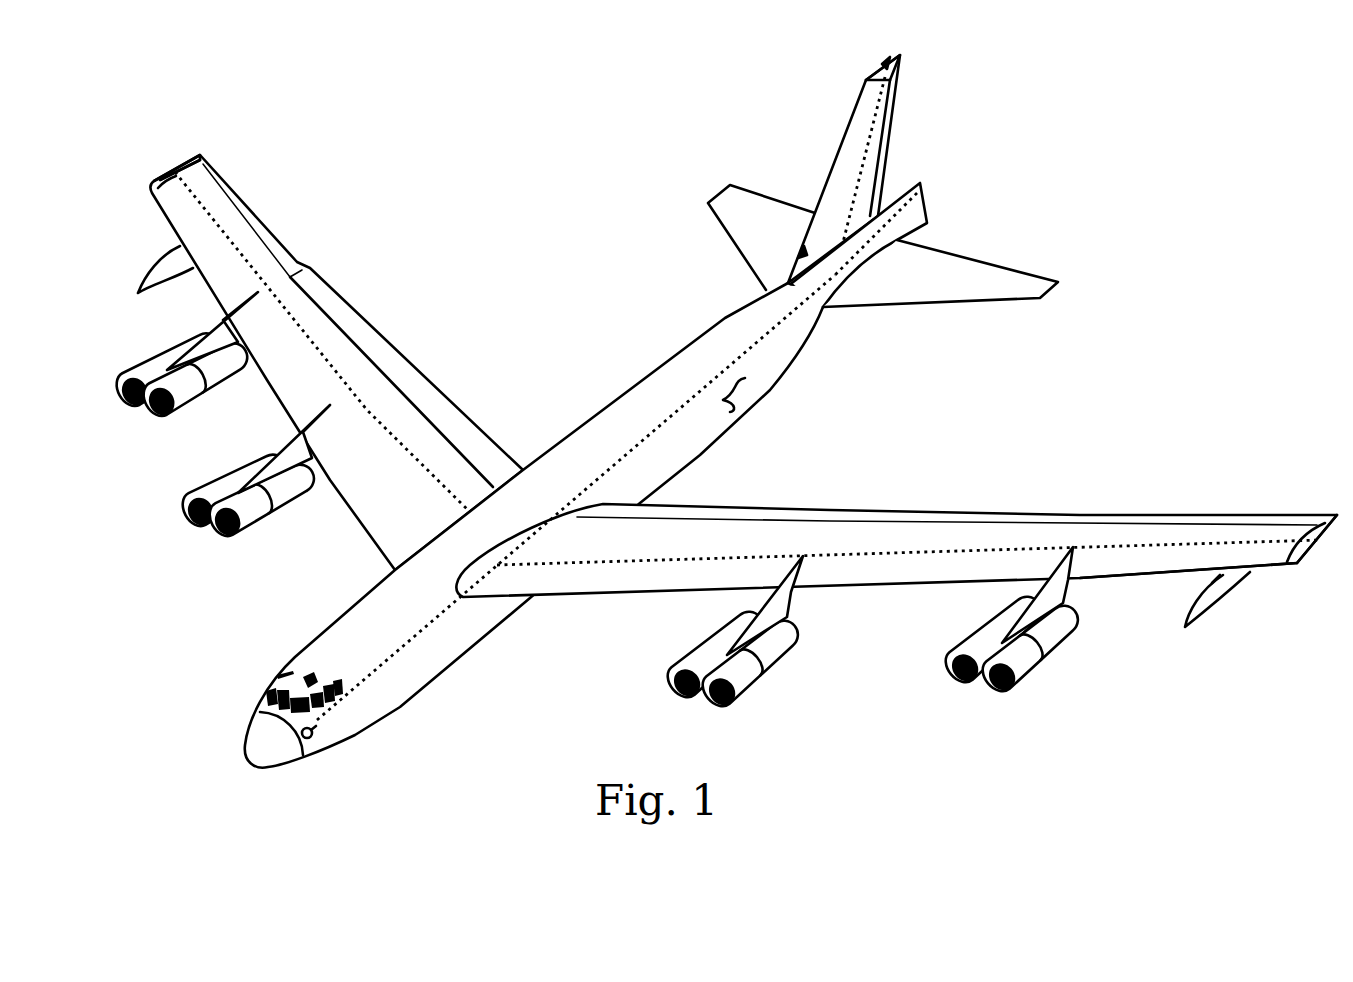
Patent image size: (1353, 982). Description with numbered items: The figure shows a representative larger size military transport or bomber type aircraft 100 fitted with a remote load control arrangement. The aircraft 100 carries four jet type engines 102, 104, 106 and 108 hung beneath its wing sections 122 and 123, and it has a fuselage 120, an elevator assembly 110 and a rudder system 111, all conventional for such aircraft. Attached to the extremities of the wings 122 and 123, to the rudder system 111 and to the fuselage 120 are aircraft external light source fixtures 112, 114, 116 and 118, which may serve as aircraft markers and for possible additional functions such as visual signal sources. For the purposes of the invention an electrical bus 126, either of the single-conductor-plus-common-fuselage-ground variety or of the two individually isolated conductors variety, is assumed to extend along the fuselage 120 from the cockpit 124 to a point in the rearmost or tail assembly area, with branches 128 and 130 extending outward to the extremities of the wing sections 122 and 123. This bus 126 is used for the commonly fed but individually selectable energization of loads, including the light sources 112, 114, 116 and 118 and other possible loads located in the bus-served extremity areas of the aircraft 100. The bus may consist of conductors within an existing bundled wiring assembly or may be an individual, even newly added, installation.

The aircraft 100 is at (738, 398).
The jet type engine 102 is at (160, 412).
The jet type engine 104 is at (240, 537).
The jet type engine 106 is at (688, 700).
The jet type engine 108 is at (985, 690).
The elevator assembly 110 is at (1058, 284).
The rudder system 111 is at (895, 108).
The aircraft external light source fixture 112 is at (168, 168).
The aircraft external light source fixture 114 is at (1323, 538).
The aircraft external light source fixture 116 is at (925, 185).
The aircraft external light source fixture 118 is at (885, 62).
The fuselage 120 is at (715, 447).
The wing section 122 is at (1163, 575).
The wing section 123 is at (207, 290).
The cockpit 124 is at (268, 700).
The electrical bus 126 is at (658, 430).
The branch 128 is at (930, 556).
The branch 130 is at (190, 198).